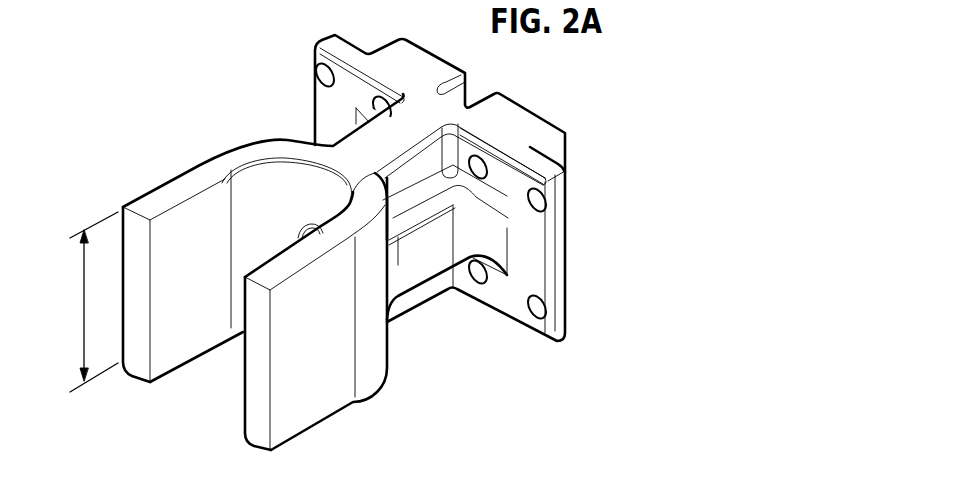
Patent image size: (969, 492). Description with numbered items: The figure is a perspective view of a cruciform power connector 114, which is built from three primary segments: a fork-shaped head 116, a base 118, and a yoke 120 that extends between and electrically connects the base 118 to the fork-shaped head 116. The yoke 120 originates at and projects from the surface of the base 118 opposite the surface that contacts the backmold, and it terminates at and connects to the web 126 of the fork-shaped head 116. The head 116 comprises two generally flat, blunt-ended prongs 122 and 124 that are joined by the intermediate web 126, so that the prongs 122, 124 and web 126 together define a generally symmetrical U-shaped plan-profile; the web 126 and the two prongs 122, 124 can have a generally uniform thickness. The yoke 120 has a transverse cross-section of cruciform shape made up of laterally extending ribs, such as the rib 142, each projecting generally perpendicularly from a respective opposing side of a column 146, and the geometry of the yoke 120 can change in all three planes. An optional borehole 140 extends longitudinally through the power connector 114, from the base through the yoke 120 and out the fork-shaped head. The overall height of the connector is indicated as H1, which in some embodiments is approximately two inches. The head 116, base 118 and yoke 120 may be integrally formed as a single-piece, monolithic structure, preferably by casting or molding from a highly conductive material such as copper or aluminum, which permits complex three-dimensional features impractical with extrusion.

The power connector 114 is at (167, 68).
The fork-shaped head 116 is at (305, 384).
The base 118 is at (574, 308).
The yoke 120 is at (408, 257).
The first prong 122 is at (150, 208).
The second prong 124 is at (268, 275).
The web 126 is at (285, 147).
The borehole 140 is at (306, 237).
The rib 142 is at (437, 238).
The column 146 is at (420, 158).
The height H1 is at (83, 277).